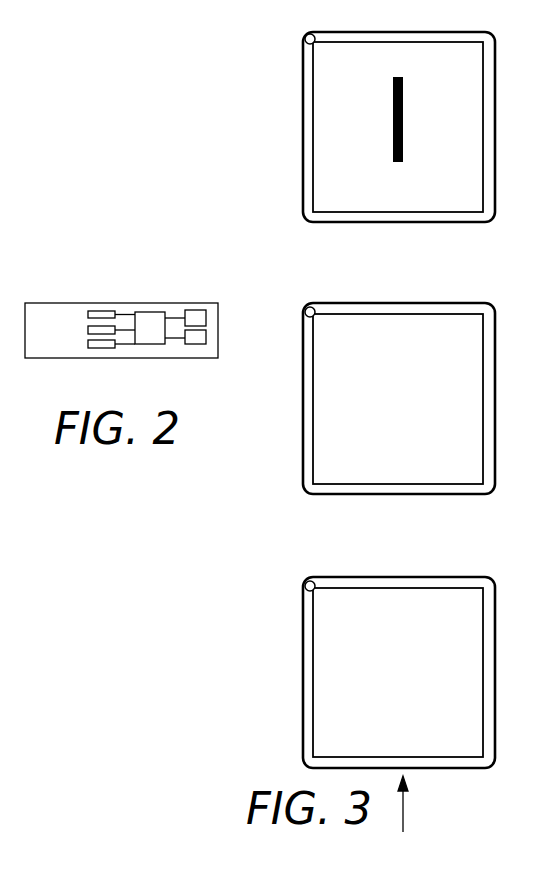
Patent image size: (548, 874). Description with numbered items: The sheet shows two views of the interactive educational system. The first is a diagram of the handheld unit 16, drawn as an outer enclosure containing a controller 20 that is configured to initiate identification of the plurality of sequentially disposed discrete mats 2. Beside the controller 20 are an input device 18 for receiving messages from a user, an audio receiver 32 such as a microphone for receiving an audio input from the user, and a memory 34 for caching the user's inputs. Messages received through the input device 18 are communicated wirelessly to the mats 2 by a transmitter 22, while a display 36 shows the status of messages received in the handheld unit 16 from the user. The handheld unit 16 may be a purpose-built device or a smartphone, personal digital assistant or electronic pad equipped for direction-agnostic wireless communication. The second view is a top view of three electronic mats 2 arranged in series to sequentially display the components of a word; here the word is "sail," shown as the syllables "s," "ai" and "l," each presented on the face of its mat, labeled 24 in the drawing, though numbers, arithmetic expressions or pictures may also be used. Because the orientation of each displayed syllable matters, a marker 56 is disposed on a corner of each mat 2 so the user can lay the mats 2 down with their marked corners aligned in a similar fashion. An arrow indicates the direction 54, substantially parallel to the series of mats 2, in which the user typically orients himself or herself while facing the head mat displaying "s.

In FIG. 3, the discrete mat 2 is at (495, 125).
In FIG. 2, the handheld unit 16 is at (117, 303).
In FIG. 2, the input device 18 is at (103, 348).
In FIG. 2, the controller 20 is at (148, 344).
In FIG. 2, the transmitter 22 is at (197, 344).
In FIG. 3, the display 24 is at (495, 85).
In FIG. 2, the audio receiver 32 is at (111, 311).
In FIG. 2, the memory 34 is at (88, 330).
In FIG. 2, the display 36 is at (197, 310).
In FIG. 3, the direction 54 is at (403, 802).
In FIG. 3, the marker 56 is at (305, 38).